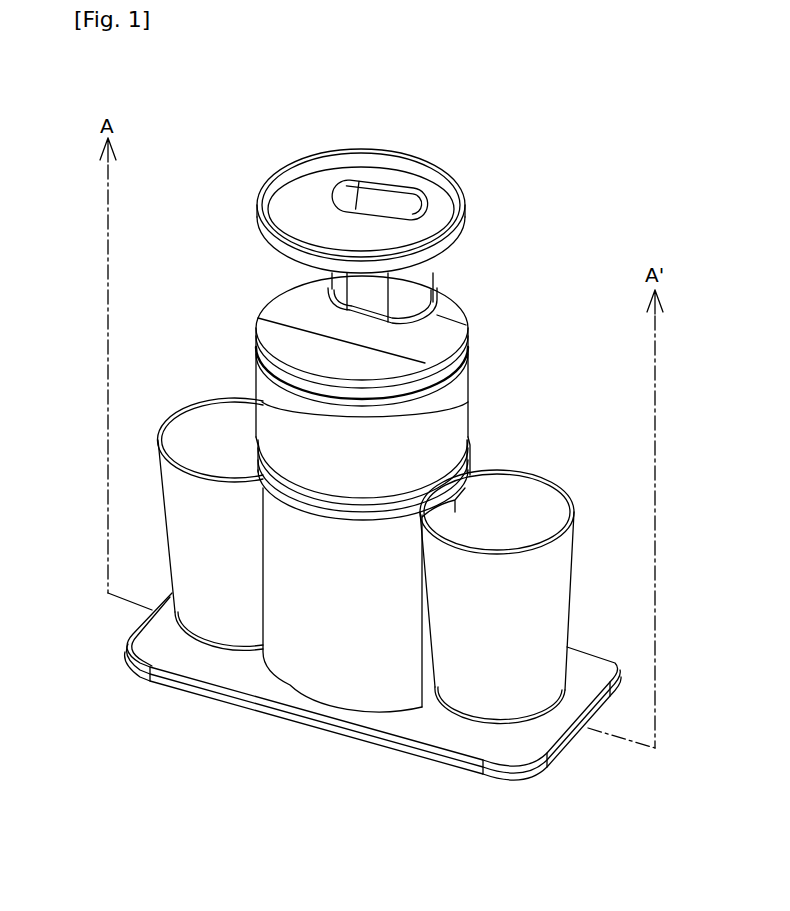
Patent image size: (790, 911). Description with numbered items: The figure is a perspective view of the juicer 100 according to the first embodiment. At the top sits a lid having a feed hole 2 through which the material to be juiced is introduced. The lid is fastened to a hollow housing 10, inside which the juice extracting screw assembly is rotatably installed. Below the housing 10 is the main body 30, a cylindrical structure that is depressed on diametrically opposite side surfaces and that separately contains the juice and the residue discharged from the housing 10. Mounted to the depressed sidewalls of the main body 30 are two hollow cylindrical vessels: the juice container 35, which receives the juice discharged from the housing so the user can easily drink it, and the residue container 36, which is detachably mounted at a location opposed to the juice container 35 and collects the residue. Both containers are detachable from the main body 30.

The juicer 100 is at (217, 70).
The feed hole 2 is at (397, 200).
The hollow housing 10 is at (457, 413).
The main body 30 is at (277, 622).
The juice container 35 is at (203, 427).
The residue container 36 is at (528, 498).